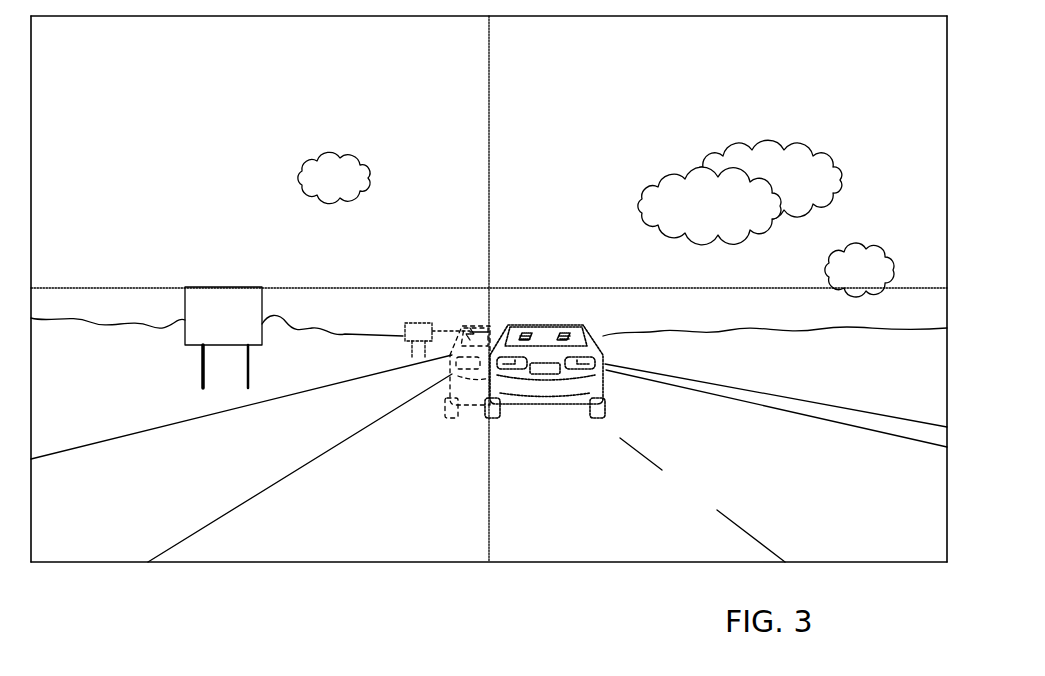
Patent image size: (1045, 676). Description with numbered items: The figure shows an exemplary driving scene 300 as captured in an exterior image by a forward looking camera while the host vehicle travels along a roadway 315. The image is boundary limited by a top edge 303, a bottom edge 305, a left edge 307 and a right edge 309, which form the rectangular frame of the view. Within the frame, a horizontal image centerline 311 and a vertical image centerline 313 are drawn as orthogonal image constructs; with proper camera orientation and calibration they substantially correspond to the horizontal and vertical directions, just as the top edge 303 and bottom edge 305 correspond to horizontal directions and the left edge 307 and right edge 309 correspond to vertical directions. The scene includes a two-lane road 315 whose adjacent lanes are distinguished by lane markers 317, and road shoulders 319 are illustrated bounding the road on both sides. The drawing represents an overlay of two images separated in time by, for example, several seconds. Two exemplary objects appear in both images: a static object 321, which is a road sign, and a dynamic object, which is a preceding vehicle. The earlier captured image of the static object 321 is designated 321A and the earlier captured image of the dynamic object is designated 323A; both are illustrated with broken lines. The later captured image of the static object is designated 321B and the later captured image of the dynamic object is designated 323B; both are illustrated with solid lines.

The driving scene 300 is at (457, 567).
The top edge 303 is at (463, 17).
The bottom edge 305 is at (387, 561).
The left edge 307 is at (31, 207).
The right edge 309 is at (947, 124).
The horizontal image centerline 311 is at (305, 288).
The vertical image centerline 313 is at (489, 222).
The roadway 315 is at (489, 486).
The lane markers 317 is at (702, 496).
The road shoulders 319 is at (187, 480).
The static object 321 is at (281, 337).
The earlier captured image of static object 321A is at (405, 340).
The later captured image of static object 321B is at (265, 321).
The earlier captured image of dynamic object 323A is at (450, 408).
The later captured image of dynamic object 323B is at (606, 394).